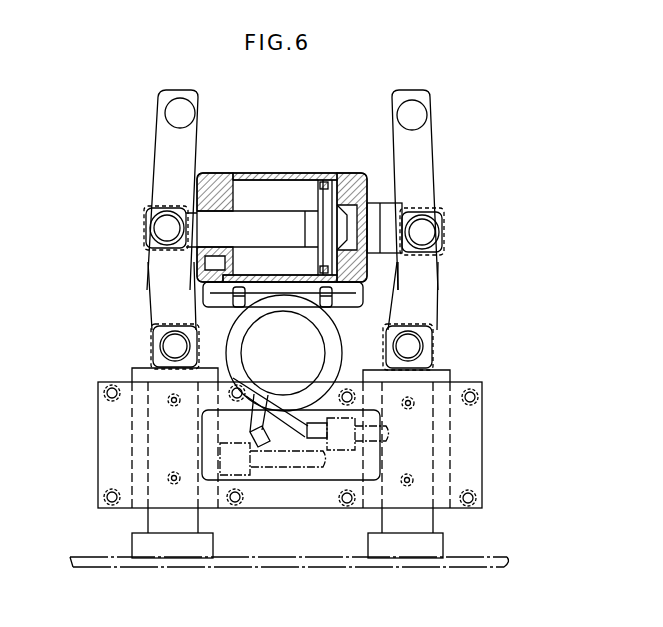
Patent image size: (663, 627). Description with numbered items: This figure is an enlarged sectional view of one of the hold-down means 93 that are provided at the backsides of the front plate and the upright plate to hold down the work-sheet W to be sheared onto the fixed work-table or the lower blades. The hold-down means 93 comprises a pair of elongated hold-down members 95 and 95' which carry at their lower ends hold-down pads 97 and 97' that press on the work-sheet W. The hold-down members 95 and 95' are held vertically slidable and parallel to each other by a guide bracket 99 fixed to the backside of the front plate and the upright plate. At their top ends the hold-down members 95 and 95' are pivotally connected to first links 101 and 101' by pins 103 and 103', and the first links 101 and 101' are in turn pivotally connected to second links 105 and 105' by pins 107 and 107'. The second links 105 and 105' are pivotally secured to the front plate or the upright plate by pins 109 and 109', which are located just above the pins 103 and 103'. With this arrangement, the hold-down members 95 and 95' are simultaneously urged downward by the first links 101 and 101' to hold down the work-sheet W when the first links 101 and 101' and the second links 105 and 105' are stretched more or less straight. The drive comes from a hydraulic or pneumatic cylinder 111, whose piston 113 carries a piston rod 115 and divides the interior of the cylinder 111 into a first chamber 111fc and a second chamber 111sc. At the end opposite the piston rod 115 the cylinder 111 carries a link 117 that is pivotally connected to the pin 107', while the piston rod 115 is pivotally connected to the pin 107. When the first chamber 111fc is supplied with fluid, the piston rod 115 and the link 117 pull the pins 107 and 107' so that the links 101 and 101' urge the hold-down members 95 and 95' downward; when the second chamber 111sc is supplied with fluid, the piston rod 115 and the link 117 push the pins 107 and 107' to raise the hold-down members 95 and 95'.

The hold-down means 93 is at (481, 276).
The hold-down member 95 is at (157, 455).
The hold-down member 95' is at (421, 457).
The hold-down pad 97 is at (172, 569).
The hold-down pad 97' is at (405, 570).
The guide bracket 99 is at (470, 440).
The first link 101 is at (146, 296).
The first link 101' is at (436, 296).
The pin 103 is at (144, 346).
The pin 103' is at (437, 347).
The second link 105 is at (145, 190).
The second link 105' is at (444, 190).
The pin 107 is at (144, 227).
The pin 107' is at (446, 231).
The pin 109 is at (144, 112).
The pin 109' is at (445, 115).
The cylinder 111 is at (278, 176).
The first chamber 111fc is at (257, 187).
The second chamber 111sc is at (388, 212).
The piston 113 is at (325, 197).
The piston rod 115 is at (213, 222).
The link 117 is at (438, 203).
The work-sheet W is at (470, 568).